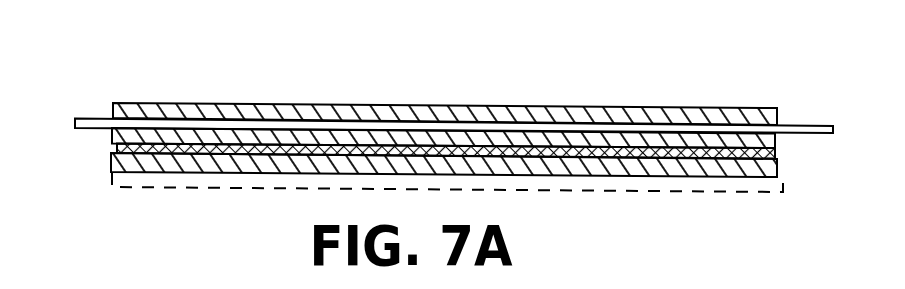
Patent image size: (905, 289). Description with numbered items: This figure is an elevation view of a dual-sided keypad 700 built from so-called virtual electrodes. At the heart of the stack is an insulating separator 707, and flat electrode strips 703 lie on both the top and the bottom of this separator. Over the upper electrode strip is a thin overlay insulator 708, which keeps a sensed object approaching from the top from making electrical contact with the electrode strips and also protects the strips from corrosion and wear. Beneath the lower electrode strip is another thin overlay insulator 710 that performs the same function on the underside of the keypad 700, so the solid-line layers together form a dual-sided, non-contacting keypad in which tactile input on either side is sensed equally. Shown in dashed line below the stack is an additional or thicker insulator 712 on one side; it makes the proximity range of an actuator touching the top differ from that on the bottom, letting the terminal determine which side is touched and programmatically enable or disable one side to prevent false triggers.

The keypad 700 is at (148, 86).
The flat electrode strips 703 is at (811, 126).
The insulating separator 707 is at (777, 147).
The thin overlay insulator 708 is at (715, 107).
The thin overlay insulator 710 is at (194, 173).
The additional insulator 712 is at (748, 196).